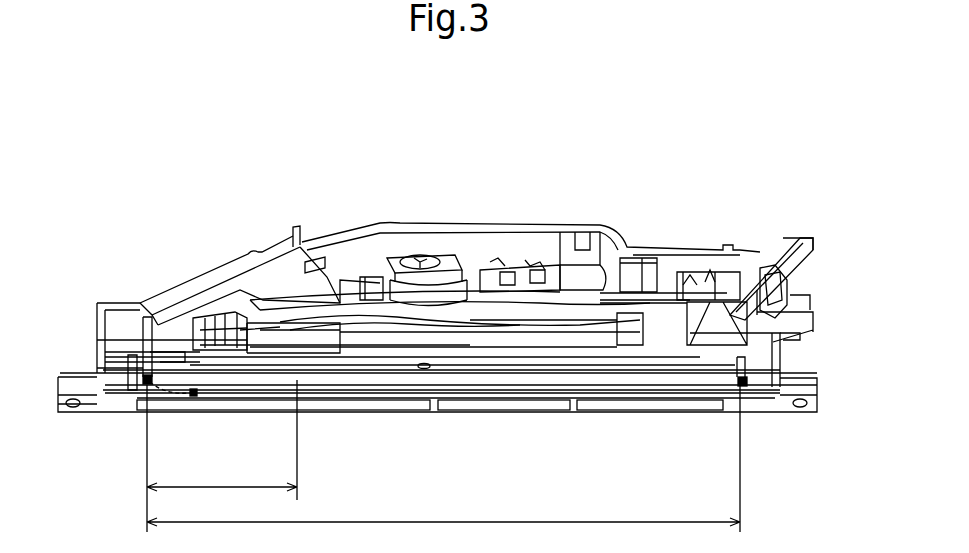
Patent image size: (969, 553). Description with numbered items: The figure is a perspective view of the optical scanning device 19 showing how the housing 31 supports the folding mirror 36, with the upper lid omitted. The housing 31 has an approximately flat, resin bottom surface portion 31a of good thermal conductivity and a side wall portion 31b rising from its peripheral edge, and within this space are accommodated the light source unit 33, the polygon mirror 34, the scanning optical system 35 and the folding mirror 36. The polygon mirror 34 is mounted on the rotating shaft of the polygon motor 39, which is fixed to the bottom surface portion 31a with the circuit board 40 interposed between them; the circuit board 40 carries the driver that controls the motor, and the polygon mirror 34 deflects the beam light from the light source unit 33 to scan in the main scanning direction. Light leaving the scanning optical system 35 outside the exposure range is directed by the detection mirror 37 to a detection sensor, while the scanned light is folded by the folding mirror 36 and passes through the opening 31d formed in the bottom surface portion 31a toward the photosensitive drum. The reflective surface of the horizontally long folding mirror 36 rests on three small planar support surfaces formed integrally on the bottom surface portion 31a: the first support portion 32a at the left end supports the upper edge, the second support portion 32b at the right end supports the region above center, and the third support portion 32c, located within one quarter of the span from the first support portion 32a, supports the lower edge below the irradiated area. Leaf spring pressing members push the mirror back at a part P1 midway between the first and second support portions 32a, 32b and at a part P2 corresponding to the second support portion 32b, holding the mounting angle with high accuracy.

The optical scanning device 19 is at (729, 188).
The housing 31 is at (773, 343).
The bottom surface portion 31a is at (603, 273).
The side wall portion 31b is at (183, 317).
The opening 31d is at (397, 393).
The first support portion 32a is at (147, 383).
The second support portion 32b is at (746, 386).
The third support portion 32c is at (195, 395).
The light source unit 33 is at (794, 299).
The polygon mirror 34 is at (453, 260).
The scanning optical system 35 is at (347, 318).
The folding mirror 36 is at (527, 383).
The detection mirror 37 is at (240, 327).
The polygon motor 39 is at (397, 280).
The circuit board 40 is at (517, 280).
The part of the rear surface of the folding mirror P1 is at (175, 373).
The part of the rear surface of the folding mirror P2 is at (750, 380).